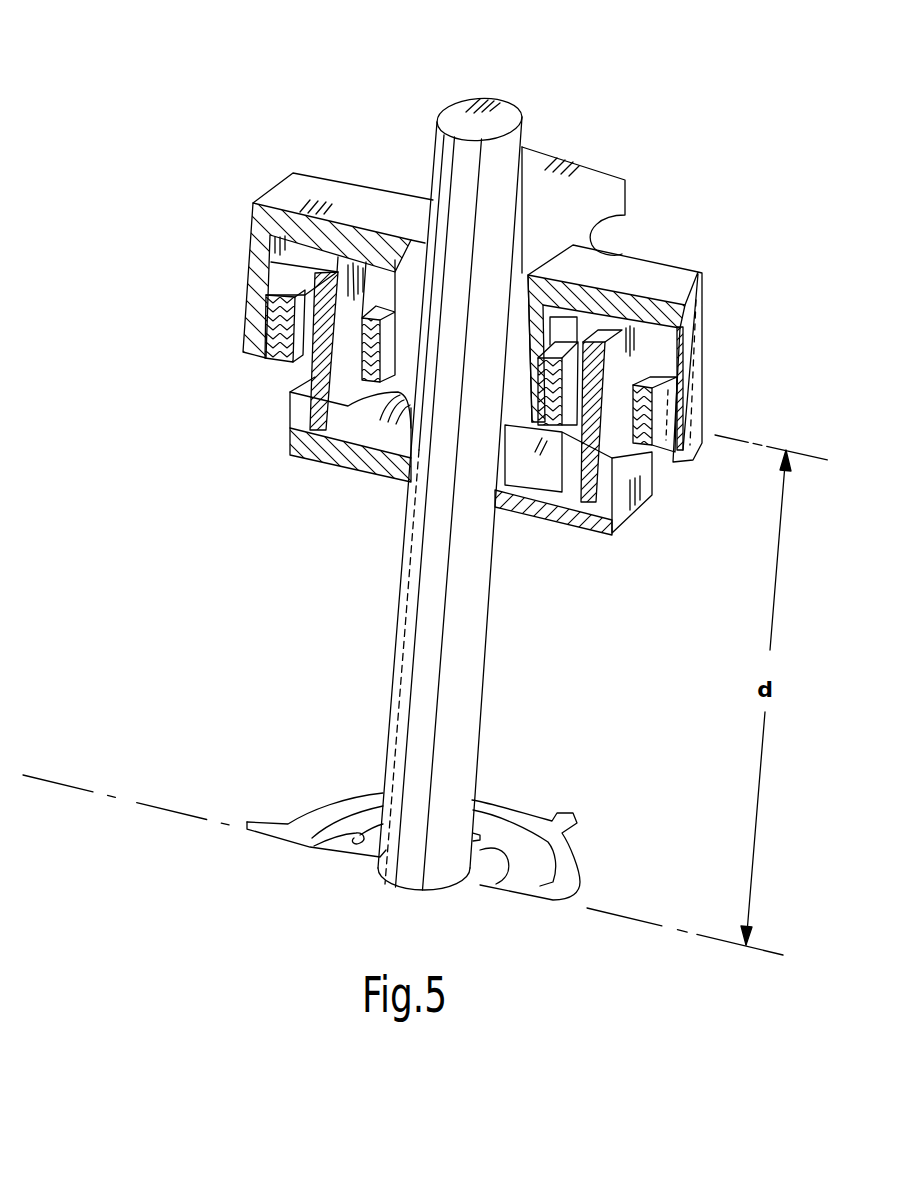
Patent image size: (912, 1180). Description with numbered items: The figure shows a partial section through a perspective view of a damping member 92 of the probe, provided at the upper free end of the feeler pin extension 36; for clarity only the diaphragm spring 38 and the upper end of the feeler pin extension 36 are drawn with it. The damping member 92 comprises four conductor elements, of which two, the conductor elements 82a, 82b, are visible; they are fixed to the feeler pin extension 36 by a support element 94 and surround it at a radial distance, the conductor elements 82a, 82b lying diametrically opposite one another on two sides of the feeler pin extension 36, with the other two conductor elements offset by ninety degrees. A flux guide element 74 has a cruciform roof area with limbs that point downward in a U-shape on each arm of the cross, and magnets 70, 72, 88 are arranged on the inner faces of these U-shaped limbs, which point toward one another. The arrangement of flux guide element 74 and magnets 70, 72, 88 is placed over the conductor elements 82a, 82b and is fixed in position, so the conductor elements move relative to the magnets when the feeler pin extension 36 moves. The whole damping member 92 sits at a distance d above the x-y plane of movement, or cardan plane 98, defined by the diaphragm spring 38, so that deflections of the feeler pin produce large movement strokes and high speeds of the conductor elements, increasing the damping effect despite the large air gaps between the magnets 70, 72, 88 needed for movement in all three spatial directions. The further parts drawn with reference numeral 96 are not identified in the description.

The feeler pin extension 36 is at (387, 735).
The diaphragm spring 38 is at (533, 897).
The magnet 70 is at (266, 360).
The magnet 72 is at (365, 408).
The flux guide element 74 is at (600, 183).
The conductor element 82a is at (292, 375).
The conductor element 82b is at (622, 373).
The magnet 88 is at (253, 247).
The damping member 92 is at (287, 146).
The support element 94 is at (535, 514).
The yoke wall 96 is at (245, 293).
The x-y plane of movement (cardan plane) 98 is at (177, 812).